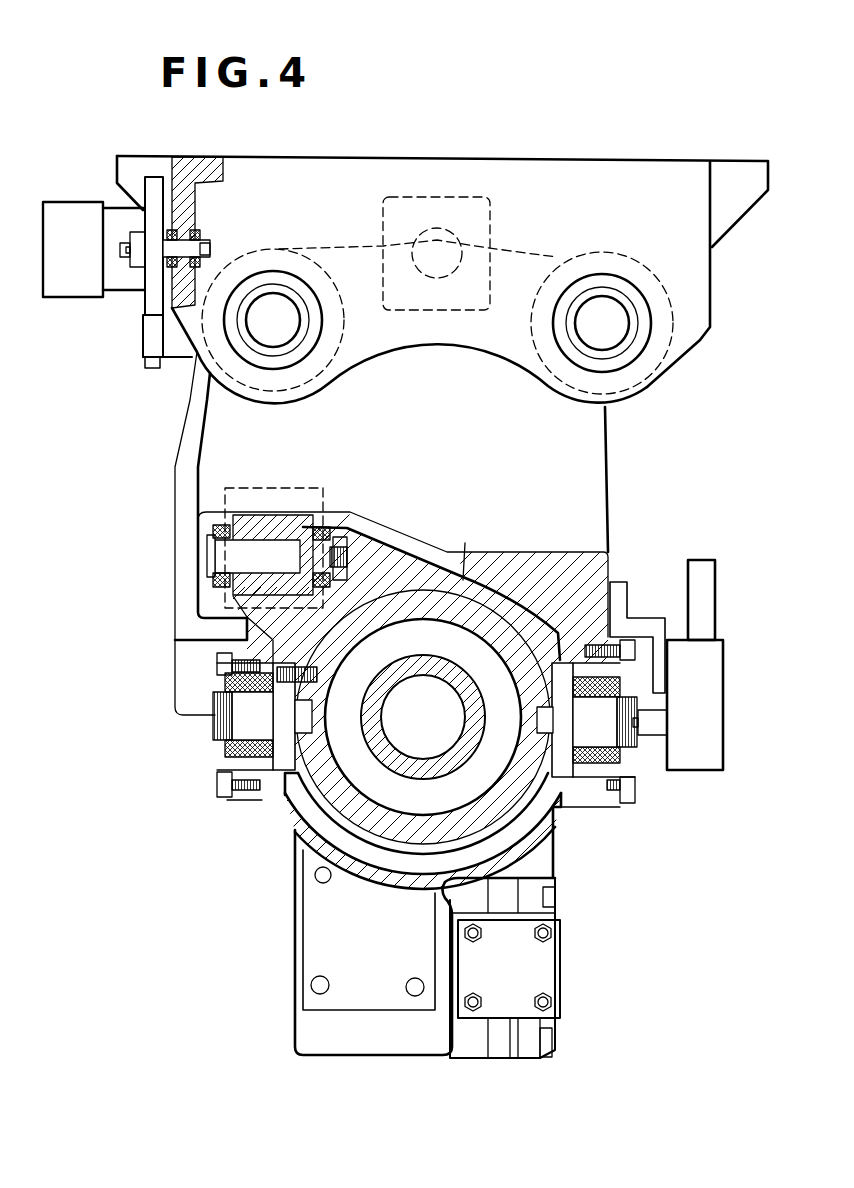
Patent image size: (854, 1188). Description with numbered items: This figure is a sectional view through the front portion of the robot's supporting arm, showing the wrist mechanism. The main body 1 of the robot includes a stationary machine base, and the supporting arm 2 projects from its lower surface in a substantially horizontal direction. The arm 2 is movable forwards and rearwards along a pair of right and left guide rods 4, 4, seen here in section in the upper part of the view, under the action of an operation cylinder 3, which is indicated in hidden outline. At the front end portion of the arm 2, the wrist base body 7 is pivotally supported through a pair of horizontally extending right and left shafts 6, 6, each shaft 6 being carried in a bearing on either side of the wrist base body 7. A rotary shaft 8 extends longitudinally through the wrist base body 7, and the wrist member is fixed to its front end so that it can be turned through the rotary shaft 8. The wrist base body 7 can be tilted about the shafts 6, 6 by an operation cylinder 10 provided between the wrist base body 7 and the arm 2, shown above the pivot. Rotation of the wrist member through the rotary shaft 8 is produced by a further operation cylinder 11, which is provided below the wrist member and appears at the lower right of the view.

The main body 1 is at (328, 156).
The supporting arm 2 is at (182, 453).
The operation cylinder 3 is at (428, 197).
The guide rods 4 is at (300, 337).
The shafts 6 is at (240, 720).
The wrist base body 7 is at (421, 582).
The rotary shaft 8 is at (455, 677).
The operation cylinder 10 is at (268, 488).
The operation cylinder 11 is at (540, 972).